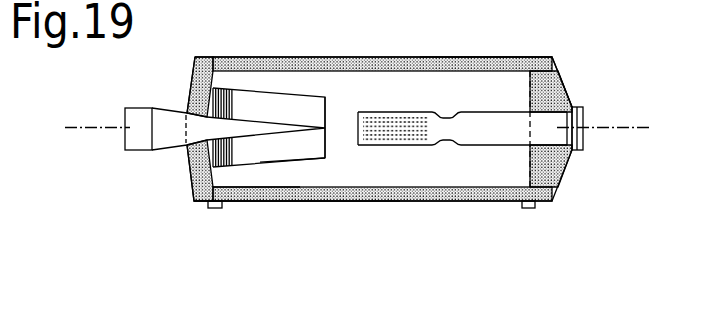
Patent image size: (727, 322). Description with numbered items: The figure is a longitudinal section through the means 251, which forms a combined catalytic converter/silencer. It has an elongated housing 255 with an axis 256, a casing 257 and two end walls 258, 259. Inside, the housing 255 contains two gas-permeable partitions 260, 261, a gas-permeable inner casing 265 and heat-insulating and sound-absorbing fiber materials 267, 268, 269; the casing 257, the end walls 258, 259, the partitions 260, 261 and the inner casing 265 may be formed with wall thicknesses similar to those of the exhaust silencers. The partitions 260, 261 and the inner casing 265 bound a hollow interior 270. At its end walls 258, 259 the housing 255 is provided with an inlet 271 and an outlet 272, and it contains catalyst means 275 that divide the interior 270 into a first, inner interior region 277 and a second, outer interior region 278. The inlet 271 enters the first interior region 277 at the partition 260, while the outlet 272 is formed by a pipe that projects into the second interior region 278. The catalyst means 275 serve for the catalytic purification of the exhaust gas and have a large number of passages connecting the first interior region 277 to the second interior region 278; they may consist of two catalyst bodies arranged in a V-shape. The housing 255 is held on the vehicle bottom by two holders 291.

The means 251 is at (186, 79).
The elongated housing 255 is at (342, 57).
The axis 256 is at (90, 130).
The casing 257 is at (428, 202).
The end wall 258 is at (188, 167).
The end wall 259 is at (560, 172).
The gas-permeable partition 260 is at (213, 175).
The gas-permeable partition 261 is at (530, 160).
The gas-permeable inner casing 265 is at (463, 57).
The heat-insulating and sound-absorbing fiber material 267 is at (192, 185).
The heat-insulating and sound-absorbing fiber material 268 is at (557, 83).
The heat-insulating and sound-absorbing fiber material 269 is at (302, 199).
The hollow interior 270 is at (317, 172).
The inlet 271 is at (167, 110).
The outlet 272 is at (583, 108).
The catalyst means 275 is at (330, 143).
The first inner interior region 277 is at (253, 125).
The second outer interior region 278 is at (415, 90).
The holder 291 is at (222, 209).